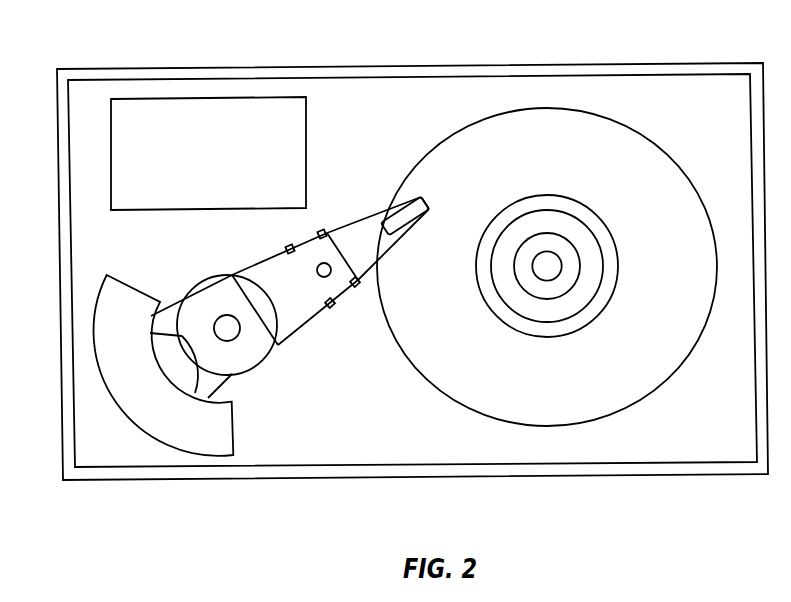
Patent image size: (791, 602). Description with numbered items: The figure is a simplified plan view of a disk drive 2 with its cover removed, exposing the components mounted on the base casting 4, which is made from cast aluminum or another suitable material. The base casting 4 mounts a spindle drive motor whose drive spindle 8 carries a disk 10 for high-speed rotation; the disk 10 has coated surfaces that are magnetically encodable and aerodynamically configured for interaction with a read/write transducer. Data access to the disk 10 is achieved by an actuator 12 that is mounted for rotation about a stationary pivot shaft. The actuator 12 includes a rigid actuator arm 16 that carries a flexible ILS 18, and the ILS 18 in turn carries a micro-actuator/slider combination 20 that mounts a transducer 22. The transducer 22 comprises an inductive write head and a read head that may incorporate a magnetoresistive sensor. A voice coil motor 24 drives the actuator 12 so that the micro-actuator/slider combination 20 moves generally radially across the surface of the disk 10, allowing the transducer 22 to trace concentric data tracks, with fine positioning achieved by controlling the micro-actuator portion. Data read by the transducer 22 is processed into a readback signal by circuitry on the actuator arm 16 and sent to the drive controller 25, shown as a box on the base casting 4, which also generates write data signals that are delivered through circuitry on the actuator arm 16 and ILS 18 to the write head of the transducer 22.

The disk drive 2 is at (88, 38).
The base casting 4 is at (386, 63).
The drive spindle 8 is at (548, 281).
The disk 10 is at (681, 232).
The actuator 12 is at (247, 355).
The actuator arm 16 is at (308, 316).
The ILS 18 is at (337, 233).
The micro-actuator/slider combination 20 is at (422, 214).
The transducer 22 is at (421, 200).
The voice coil motor 24 is at (130, 418).
The drive controller 25 is at (308, 147).